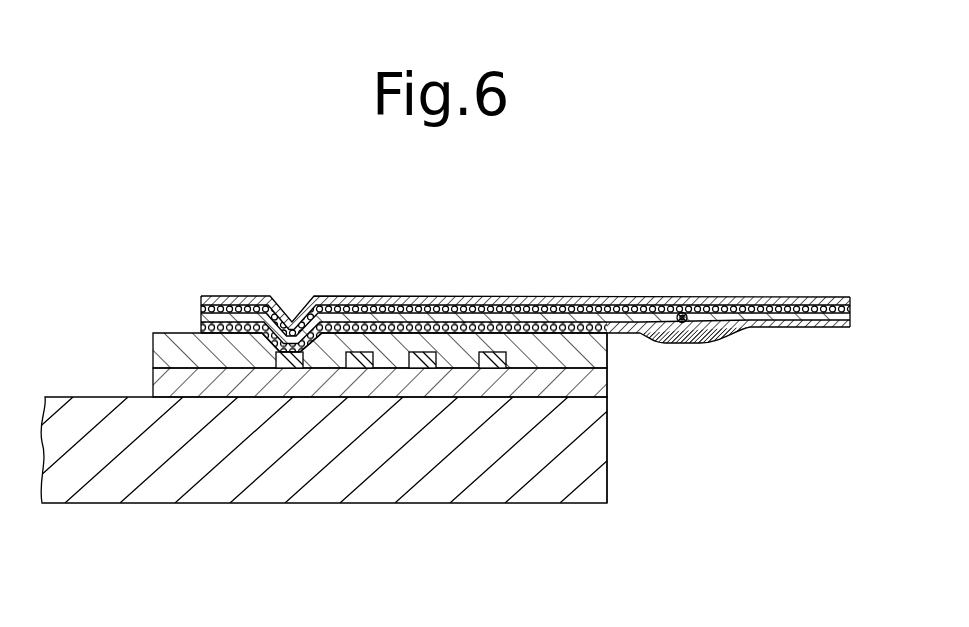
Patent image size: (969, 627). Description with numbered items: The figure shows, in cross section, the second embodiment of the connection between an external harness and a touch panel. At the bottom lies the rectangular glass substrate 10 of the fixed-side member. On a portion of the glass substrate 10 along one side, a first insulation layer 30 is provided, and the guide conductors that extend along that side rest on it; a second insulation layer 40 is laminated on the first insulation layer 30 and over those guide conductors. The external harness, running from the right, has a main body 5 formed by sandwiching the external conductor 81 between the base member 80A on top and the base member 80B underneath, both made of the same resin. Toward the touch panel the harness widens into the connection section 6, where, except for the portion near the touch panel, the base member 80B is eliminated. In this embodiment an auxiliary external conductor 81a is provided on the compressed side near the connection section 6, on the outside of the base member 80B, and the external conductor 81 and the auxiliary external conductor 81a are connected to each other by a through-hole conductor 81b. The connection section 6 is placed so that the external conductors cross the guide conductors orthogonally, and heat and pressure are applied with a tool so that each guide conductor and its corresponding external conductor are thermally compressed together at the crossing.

The main body 5 is at (729, 306).
The connection section 6 is at (449, 297).
The glass substrate 10 is at (177, 476).
The first insulation layer 30 is at (153, 378).
The second insulation layer 40 is at (153, 340).
The base member 80A is at (778, 297).
The base member 80B is at (825, 327).
The first external conductor 81 is at (796, 323).
The auxiliary external conductor 81a is at (645, 340).
The through-hole conductor 81b is at (682, 312).